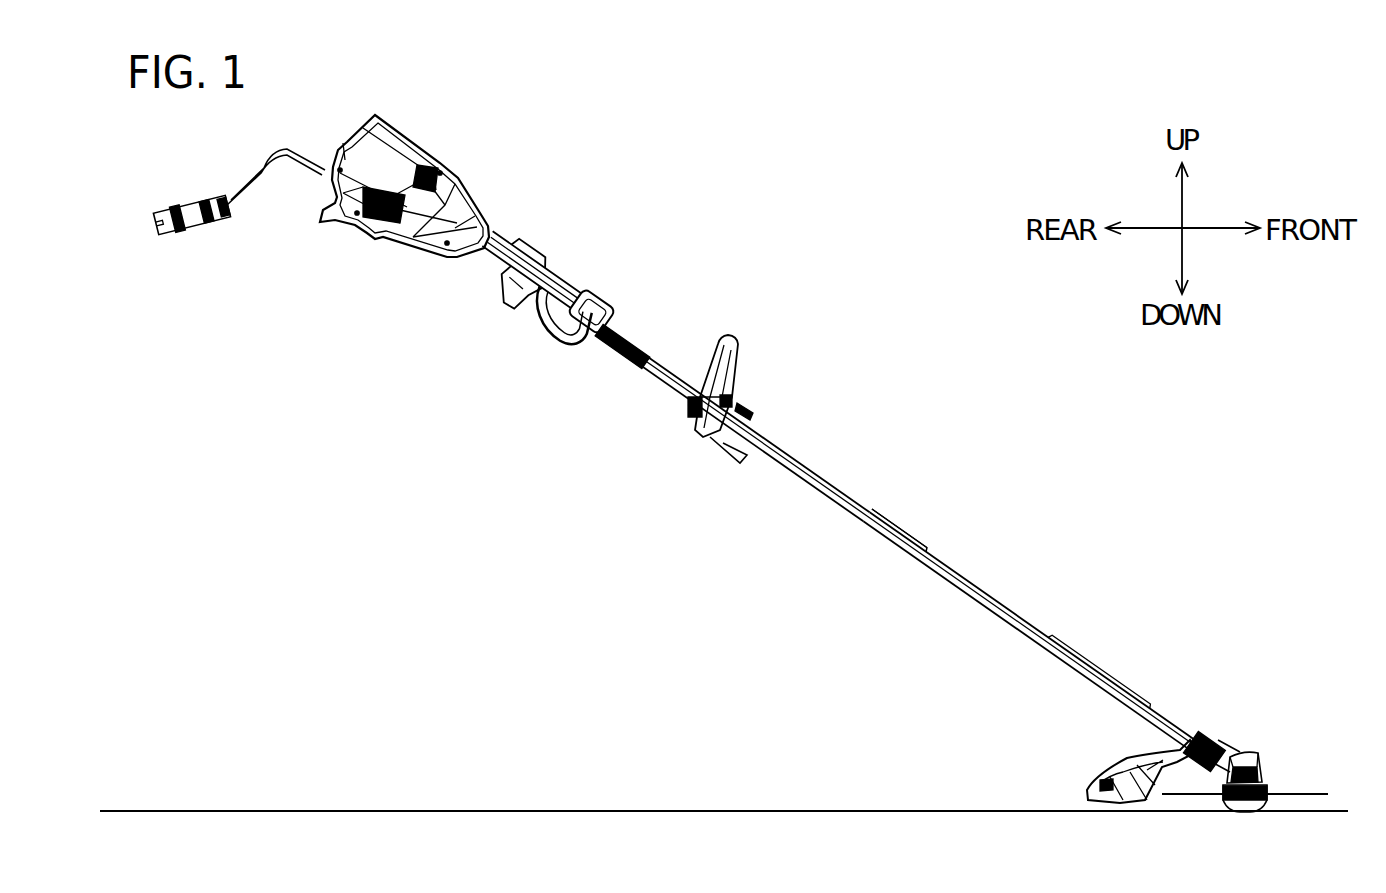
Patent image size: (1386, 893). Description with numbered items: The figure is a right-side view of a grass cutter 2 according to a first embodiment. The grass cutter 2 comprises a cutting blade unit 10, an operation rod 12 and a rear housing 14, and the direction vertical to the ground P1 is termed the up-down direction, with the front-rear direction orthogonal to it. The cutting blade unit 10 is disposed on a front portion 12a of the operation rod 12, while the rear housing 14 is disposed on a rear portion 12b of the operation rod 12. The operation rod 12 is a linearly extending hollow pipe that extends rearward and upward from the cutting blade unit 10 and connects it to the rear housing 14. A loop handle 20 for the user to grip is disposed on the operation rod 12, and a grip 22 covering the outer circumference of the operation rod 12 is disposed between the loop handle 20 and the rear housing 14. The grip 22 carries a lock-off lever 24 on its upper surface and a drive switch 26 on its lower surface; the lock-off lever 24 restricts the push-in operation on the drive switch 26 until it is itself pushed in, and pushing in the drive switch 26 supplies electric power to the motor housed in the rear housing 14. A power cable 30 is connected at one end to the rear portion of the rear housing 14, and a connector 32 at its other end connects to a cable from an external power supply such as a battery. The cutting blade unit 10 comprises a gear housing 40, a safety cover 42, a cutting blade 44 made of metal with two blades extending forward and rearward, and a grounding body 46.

The grass cutter 2 is at (937, 189).
The cutting blade unit 10 is at (1282, 611).
The operation rod 12 is at (834, 478).
The front portion of the operation rod 12a is at (1160, 698).
The rear portion of the operation rod 12b is at (640, 268).
The rear housing 14 is at (466, 128).
The loop handle 20 is at (738, 342).
The grip 22 is at (566, 380).
The lock-off lever 24 is at (518, 245).
The drive switch 26 is at (517, 318).
The power cable 30 is at (250, 172).
The connector 32 is at (171, 229).
The gear housing 40 is at (1253, 753).
The safety cover 42 is at (1095, 772).
The cutting blade 44 is at (1302, 790).
The grounding body 46 is at (1247, 807).
The ground P1 is at (1347, 807).